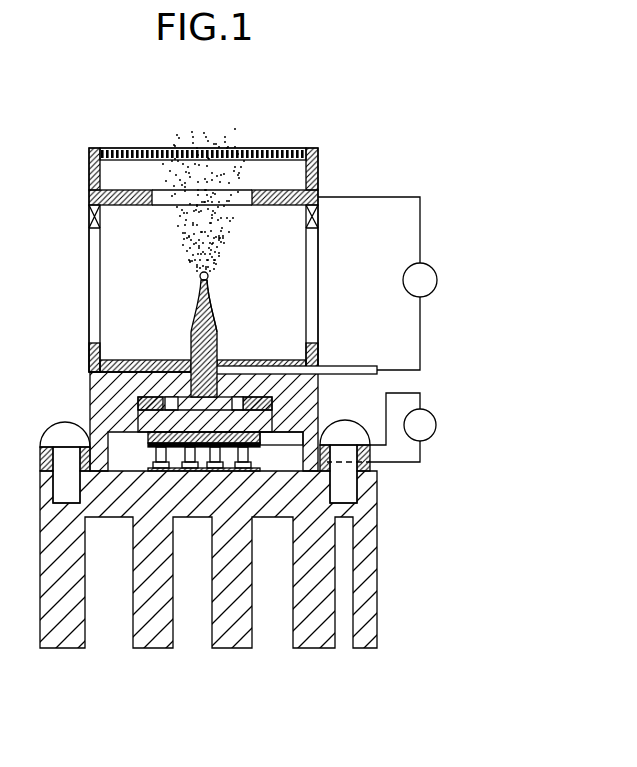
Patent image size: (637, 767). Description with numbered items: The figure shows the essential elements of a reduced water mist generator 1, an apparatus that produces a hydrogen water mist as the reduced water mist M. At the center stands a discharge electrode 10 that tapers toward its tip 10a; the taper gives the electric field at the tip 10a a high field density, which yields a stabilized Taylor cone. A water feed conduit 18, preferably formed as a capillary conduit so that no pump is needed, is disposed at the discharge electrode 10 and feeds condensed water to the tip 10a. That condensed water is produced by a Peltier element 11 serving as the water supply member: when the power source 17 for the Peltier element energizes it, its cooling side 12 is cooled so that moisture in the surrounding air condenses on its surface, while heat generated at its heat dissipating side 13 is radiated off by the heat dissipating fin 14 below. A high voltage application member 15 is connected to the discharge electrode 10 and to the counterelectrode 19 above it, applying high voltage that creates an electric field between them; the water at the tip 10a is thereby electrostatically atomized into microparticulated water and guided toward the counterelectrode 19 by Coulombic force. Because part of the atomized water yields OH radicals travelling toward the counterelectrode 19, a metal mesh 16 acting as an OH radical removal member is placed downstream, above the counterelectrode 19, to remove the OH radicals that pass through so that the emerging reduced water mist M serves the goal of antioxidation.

The reduced water mist generator 1 is at (372, 122).
The discharge electrode 10 is at (191, 322).
The tip 10a is at (209, 276).
The Peltier element 11 is at (218, 450).
The cooling side 12 is at (178, 450).
The heat dissipating side 13 is at (263, 463).
The heat dissipating fin 14 is at (315, 637).
The high voltage application member 15 is at (437, 281).
The metal mesh 16 is at (265, 147).
The power source for the Peltier element 17 is at (436, 426).
The water feed conduit 18 is at (217, 335).
The counterelectrode 19 is at (283, 203).
The reduced water mist M is at (192, 147).